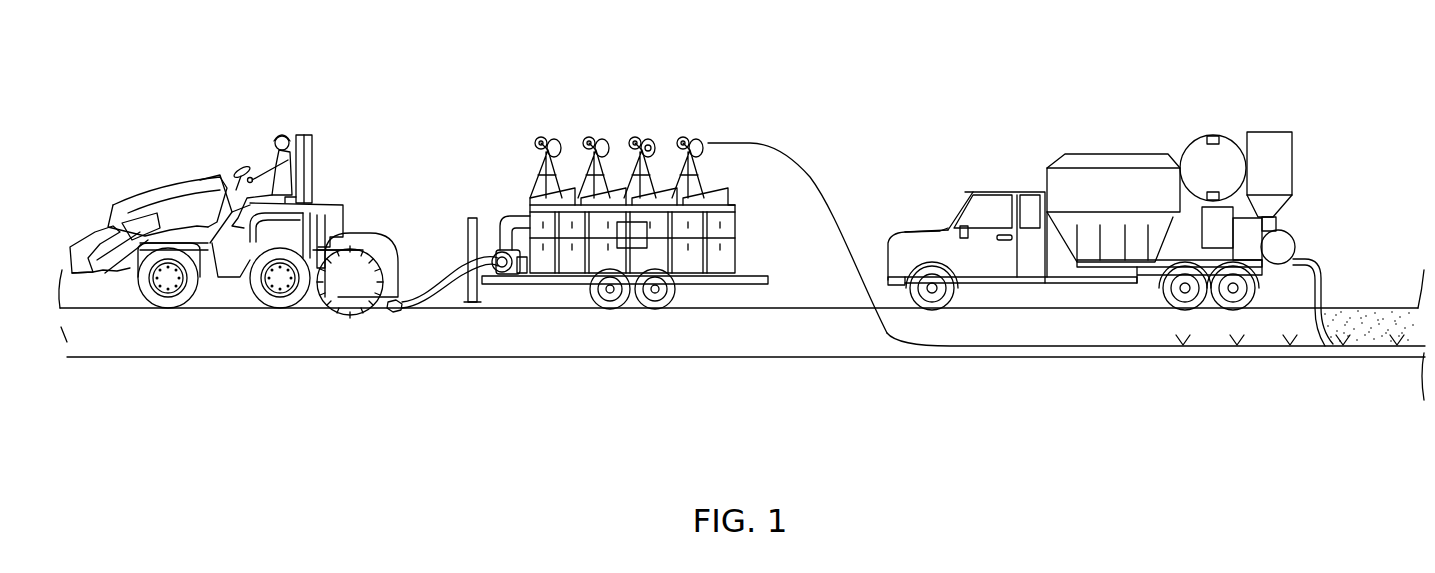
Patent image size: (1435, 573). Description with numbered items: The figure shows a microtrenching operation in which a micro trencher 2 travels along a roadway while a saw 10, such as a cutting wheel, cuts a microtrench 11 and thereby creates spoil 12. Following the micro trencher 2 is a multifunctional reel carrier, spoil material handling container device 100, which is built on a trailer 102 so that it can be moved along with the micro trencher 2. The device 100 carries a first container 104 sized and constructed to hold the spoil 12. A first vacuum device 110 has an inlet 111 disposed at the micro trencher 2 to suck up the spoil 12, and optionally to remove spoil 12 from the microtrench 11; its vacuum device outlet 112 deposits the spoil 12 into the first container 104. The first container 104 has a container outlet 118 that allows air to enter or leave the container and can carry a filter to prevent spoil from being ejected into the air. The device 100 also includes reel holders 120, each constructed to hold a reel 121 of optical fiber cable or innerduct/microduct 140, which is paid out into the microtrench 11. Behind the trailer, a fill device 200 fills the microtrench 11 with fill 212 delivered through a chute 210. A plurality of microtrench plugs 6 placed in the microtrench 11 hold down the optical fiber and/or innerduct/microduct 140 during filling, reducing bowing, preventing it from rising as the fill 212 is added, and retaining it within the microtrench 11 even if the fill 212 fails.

The micro trencher 2 is at (313, 135).
The microtrench plugs 6 is at (1192, 338).
The saw 10 is at (362, 315).
The microtrench 11 is at (222, 350).
The spoil 12 is at (388, 307).
The multifunctional reel carrier, spoil material handling container device 100 is at (575, 100).
The trailer 102 is at (553, 285).
The first container 104 is at (737, 217).
The first vacuum device 110 is at (498, 256).
The inlet 111 is at (448, 280).
The vacuum device outlet 112 is at (505, 215).
The container outlet 118 is at (647, 240).
The reel holder 120 is at (538, 157).
The reel 121 is at (650, 140).
The optical fiber and/or innerduct/microduct 140 is at (915, 343).
The fill device 200 is at (1097, 152).
The chute 210 is at (1317, 272).
The fill 212 is at (1372, 337).